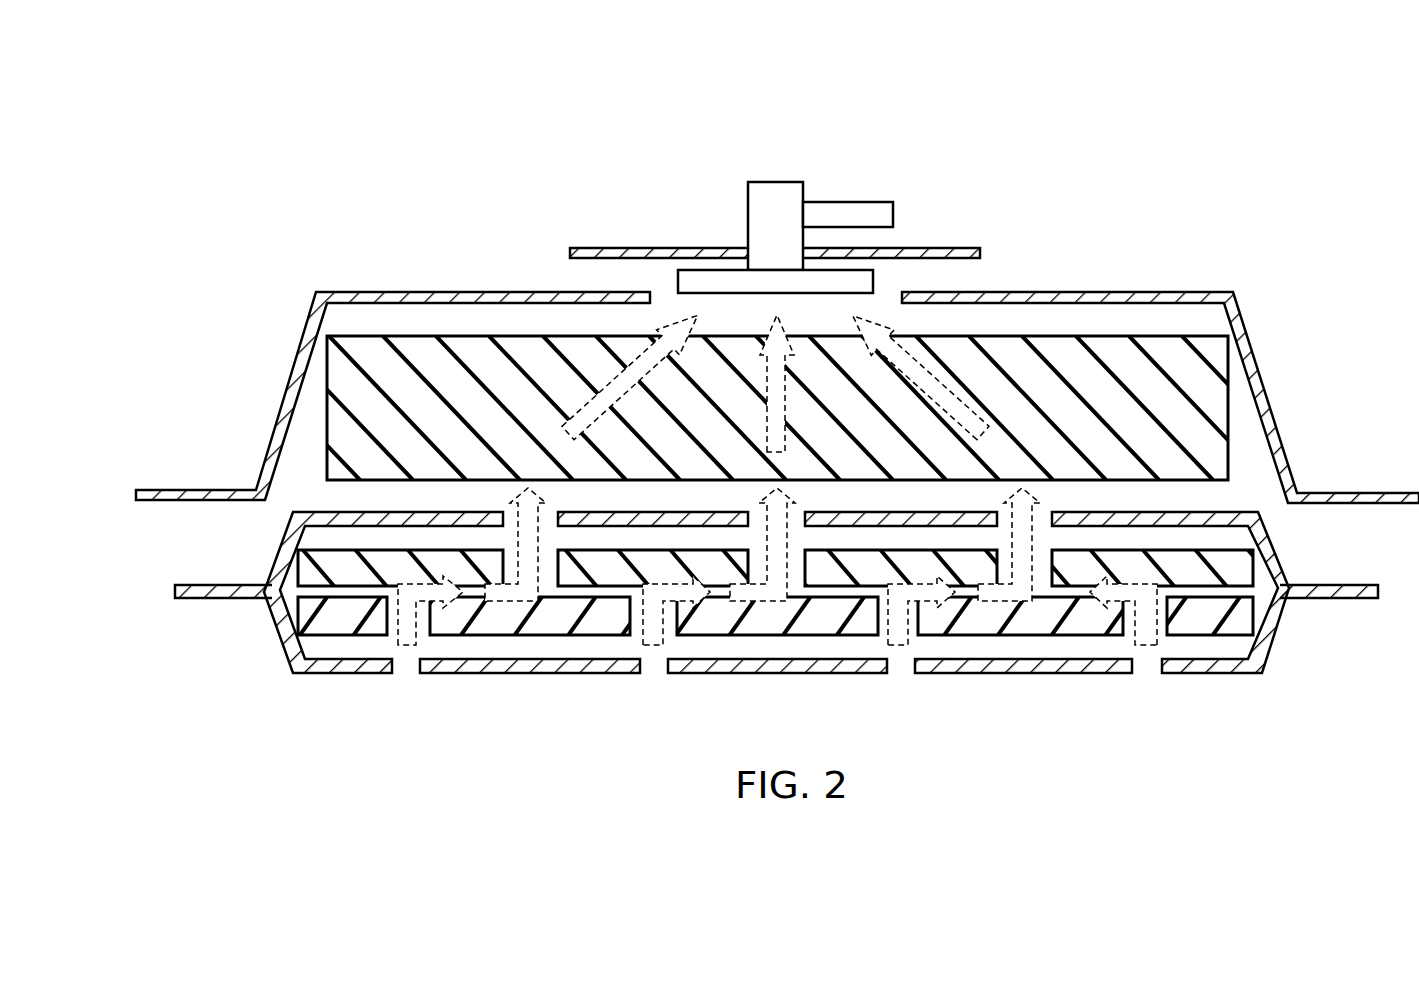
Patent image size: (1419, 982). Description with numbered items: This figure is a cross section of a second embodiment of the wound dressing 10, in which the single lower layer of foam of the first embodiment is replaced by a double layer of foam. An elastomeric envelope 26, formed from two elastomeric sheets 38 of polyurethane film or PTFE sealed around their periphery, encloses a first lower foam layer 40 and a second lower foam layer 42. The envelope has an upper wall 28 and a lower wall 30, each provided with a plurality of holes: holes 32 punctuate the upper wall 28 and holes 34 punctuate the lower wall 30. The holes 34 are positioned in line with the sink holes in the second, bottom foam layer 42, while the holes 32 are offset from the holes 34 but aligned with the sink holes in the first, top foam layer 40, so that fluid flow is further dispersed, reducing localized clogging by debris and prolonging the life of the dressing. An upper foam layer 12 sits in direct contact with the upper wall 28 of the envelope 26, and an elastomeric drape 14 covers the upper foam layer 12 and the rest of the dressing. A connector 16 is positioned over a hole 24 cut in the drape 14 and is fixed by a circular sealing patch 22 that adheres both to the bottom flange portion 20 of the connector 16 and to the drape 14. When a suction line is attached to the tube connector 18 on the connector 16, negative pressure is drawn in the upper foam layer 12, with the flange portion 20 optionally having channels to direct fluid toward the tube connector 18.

The wound dressing 10 is at (244, 136).
The upper foam layer 12 is at (512, 336).
The elastomeric drape 14 is at (1178, 293).
The connector 16 is at (777, 182).
The tube connector 18 is at (848, 202).
The flange portion 20 is at (875, 283).
The sealing patch 22 is at (608, 248).
The hole 24 is at (665, 293).
The elastomeric envelope 26 is at (1270, 507).
The upper wall 28 is at (1244, 508).
The lower wall 30 is at (757, 673).
The holes 32 is at (548, 525).
The holes 34 is at (898, 668).
The elastomeric sheets 38 is at (222, 600).
The first lower foam layer 40 is at (295, 578).
The second lower foam layer 42 is at (475, 635).